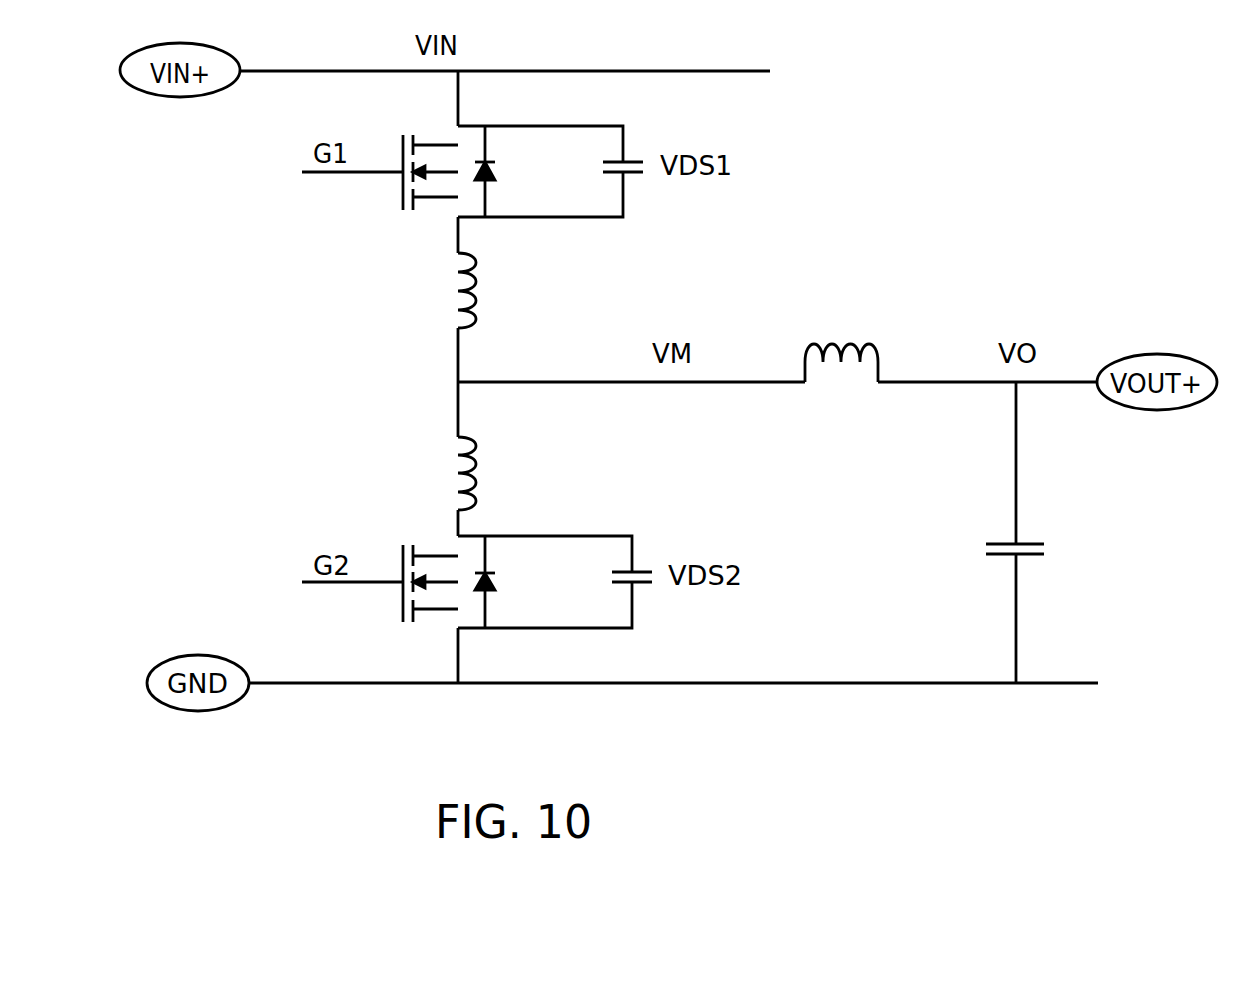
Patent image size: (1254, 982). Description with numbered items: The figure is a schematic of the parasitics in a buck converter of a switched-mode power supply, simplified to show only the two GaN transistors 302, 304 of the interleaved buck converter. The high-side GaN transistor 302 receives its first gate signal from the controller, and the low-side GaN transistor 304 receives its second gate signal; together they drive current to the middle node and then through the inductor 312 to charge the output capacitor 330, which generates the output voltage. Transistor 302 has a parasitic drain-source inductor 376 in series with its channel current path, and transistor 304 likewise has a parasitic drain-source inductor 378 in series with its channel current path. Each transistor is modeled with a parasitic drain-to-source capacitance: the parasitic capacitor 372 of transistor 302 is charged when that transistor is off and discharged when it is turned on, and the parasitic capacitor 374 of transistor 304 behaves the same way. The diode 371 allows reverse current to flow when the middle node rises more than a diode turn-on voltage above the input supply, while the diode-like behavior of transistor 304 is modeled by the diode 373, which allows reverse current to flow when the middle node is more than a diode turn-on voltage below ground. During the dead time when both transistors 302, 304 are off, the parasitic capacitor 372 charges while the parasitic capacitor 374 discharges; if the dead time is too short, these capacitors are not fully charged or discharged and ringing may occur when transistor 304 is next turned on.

The GaN transistor 302 is at (400, 201).
The GaN transistor 304 is at (400, 611).
The diode 371 is at (495, 181).
The parasitic capacitor 372 is at (645, 173).
The diode 373 is at (495, 591).
The parasitic capacitor 374 is at (654, 584).
The parasitic drain-source inductor 376 is at (474, 282).
The parasitic drain-source inductor 378 is at (474, 465).
The inductor 312 is at (843, 366).
The output capacitor 330 is at (1044, 556).